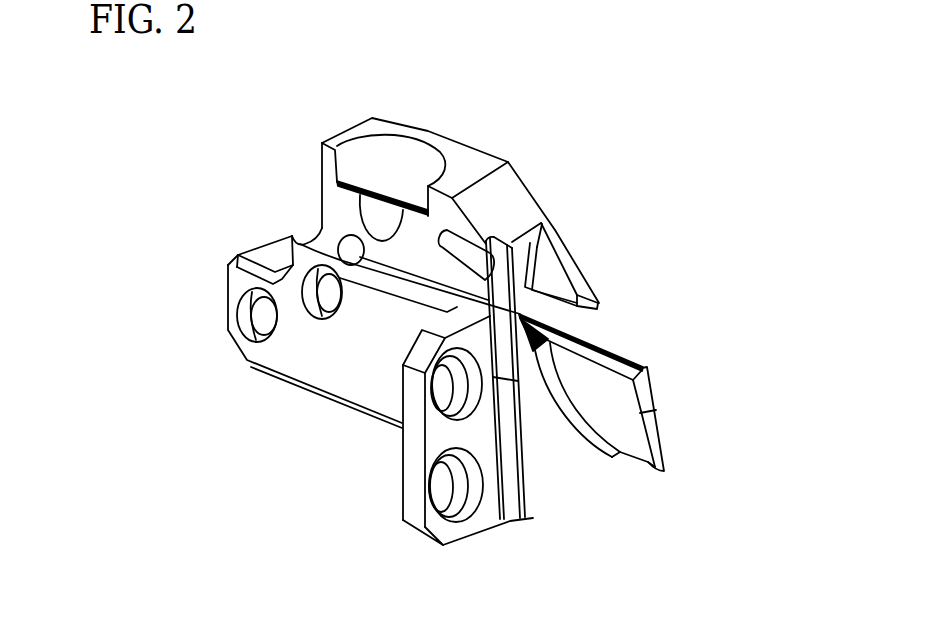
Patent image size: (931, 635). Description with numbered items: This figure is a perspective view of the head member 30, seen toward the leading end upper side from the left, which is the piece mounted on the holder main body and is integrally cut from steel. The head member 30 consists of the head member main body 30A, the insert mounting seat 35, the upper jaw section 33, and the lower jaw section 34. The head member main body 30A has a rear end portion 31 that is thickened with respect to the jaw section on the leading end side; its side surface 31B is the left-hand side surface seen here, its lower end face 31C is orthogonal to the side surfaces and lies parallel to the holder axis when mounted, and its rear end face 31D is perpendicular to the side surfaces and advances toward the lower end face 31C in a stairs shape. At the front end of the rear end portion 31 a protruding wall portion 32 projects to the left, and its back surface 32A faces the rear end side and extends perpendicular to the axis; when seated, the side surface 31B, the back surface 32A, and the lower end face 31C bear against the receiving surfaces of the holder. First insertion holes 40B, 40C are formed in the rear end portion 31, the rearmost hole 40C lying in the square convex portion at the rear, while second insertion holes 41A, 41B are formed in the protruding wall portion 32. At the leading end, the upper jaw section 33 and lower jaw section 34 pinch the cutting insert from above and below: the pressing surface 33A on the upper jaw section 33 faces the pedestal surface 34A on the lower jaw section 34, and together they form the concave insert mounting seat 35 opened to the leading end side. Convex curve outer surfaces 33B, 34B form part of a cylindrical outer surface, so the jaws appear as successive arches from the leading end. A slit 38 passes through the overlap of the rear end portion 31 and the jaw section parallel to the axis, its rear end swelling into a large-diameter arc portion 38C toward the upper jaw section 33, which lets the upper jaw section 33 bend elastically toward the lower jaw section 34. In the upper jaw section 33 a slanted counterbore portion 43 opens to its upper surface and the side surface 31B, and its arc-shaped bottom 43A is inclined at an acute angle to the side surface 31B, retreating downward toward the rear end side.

The head member 30 is at (539, 163).
The head member main body 30A is at (546, 213).
The rear end portion 31 is at (227, 293).
The side surface on the other side 31B is at (333, 385).
The lower end face 31C is at (282, 381).
The rear end face 31D is at (271, 251).
The protruding wall portion 32 is at (413, 514).
The back surface 32A is at (408, 505).
The upper jaw section 33 is at (558, 256).
The pressing surface 33A is at (604, 312).
The convex curve outer surface 33B is at (563, 293).
The lower jaw section 34 is at (653, 436).
The pedestal surface 34A is at (628, 356).
The convex curve outer surface 34B is at (635, 447).
The insert mounting seat 35 is at (648, 385).
The slit 38 is at (387, 275).
The large-diameter arc portion 38C is at (347, 249).
The first insertion hole 40B is at (317, 308).
The first insertion hole 40C is at (245, 318).
The second insertion hole 41A is at (455, 393).
The second insertion hole 41B is at (453, 492).
The counterbore portion 43 is at (406, 157).
The bottom of the counterbore portion 43A is at (372, 197).